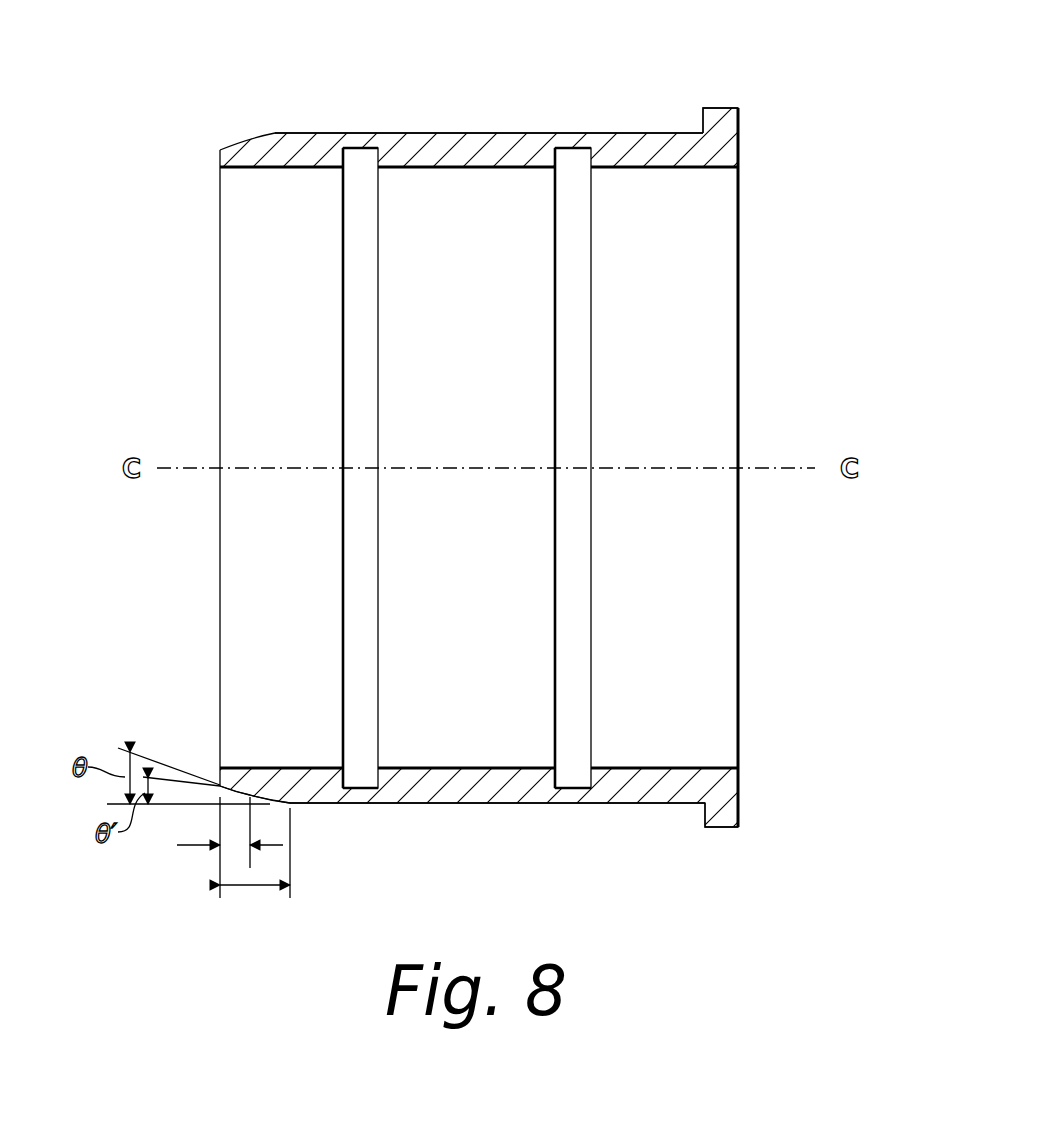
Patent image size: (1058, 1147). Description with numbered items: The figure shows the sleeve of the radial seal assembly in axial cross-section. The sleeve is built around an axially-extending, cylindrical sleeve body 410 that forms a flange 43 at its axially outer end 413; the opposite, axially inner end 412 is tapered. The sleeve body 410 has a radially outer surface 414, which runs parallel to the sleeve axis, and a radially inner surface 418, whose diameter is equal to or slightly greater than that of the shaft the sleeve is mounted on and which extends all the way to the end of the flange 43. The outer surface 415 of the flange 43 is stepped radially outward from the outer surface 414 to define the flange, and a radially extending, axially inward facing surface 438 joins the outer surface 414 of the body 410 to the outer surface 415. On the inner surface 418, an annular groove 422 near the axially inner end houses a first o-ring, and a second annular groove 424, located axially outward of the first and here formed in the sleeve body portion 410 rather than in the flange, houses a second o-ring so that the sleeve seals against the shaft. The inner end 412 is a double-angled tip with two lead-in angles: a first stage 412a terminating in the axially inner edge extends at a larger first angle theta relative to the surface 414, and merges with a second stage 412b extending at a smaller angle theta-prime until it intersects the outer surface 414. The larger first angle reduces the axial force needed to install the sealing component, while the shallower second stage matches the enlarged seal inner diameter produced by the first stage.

The cylindrical sleeve body 410 is at (383, 133).
The axially inner end 412 is at (197, 754).
The first stage 412a is at (233, 147).
The second stage 412b is at (270, 133).
The axially outer end 413 is at (668, 94).
The radially outer surface 414 is at (592, 132).
The outer surface of the flange 415 is at (713, 108).
The radially inner surface 418 is at (495, 167).
The annular groove 422 is at (360, 160).
The second annular groove 424 is at (572, 160).
The flange 43 is at (740, 134).
The axially inward facing surface 438 is at (705, 813).